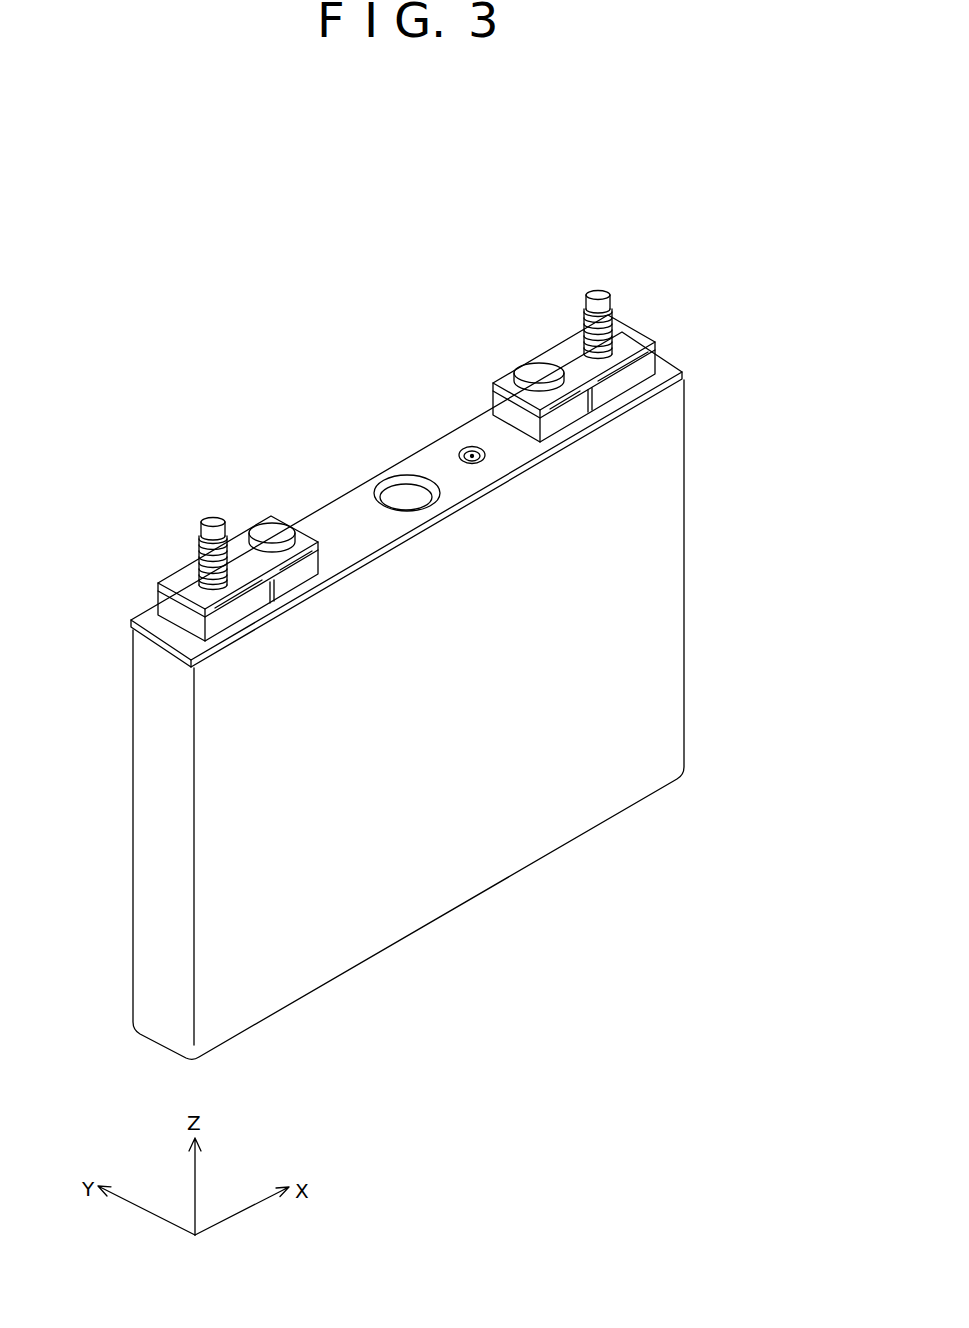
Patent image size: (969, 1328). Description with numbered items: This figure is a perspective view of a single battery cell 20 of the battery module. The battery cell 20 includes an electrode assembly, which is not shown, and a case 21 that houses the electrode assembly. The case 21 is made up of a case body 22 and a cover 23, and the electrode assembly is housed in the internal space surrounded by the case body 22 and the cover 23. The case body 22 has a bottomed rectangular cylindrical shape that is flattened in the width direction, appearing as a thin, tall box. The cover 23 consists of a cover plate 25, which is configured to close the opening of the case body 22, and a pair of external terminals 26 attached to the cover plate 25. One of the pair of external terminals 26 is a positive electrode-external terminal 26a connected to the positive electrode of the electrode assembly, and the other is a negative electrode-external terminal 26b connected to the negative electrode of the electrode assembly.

The battery cell 20 is at (682, 230).
The case 21 is at (801, 428).
The case body 22 is at (656, 557).
The cover 23 is at (675, 352).
The cover plate 25 is at (356, 510).
The external terminals 26 is at (358, 421).
The positive electrode-external terminal 26a is at (198, 557).
The negative electrode-external terminal 26b is at (598, 300).